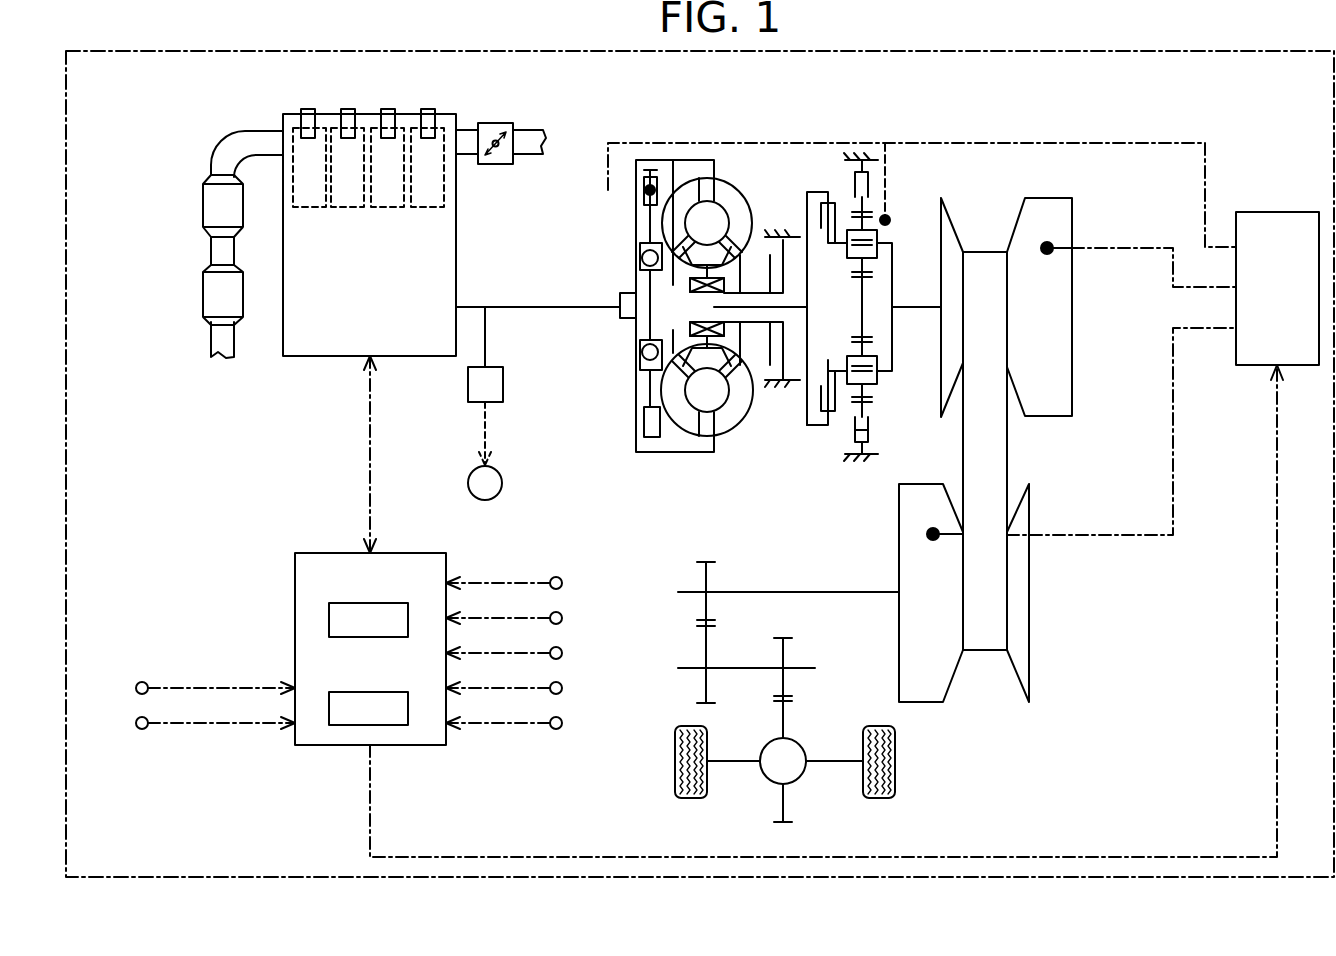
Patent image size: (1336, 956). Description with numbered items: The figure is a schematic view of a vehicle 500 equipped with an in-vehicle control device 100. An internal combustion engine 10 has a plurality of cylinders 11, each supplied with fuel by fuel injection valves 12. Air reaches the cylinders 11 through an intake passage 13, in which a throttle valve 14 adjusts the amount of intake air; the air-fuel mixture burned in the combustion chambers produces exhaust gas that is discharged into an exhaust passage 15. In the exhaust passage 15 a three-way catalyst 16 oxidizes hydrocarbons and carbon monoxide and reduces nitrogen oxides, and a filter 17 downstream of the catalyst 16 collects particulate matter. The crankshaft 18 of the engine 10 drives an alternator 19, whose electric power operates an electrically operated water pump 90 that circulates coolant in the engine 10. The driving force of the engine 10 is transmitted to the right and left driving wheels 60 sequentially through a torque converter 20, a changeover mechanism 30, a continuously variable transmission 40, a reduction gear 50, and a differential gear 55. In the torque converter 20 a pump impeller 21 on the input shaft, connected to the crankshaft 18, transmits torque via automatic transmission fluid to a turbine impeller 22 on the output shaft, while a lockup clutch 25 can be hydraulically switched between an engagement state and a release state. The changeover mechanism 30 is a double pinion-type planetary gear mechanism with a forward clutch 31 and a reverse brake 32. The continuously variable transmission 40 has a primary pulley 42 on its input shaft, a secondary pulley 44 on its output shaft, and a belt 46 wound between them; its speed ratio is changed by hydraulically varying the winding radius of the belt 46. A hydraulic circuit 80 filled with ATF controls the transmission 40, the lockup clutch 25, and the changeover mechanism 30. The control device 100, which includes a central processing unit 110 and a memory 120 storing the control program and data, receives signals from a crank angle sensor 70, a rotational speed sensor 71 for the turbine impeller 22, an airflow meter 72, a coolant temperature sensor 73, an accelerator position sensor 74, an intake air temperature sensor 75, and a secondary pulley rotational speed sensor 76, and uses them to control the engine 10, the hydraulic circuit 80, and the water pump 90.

The vehicle 500 is at (128, 51).
The internal combustion engine 10 is at (299, 381).
The cylinders 11 is at (293, 197).
The fuel injection valves 12 is at (308, 109).
The intake passage 13 is at (538, 130).
The throttle valve 14 is at (498, 123).
The exhaust passage 15 is at (253, 131).
The three-way catalyst 16 is at (203, 207).
The filter 17 is at (203, 295).
The crankshaft 18 is at (520, 310).
The alternator 19 is at (468, 390).
The electrically operated water pump 90 is at (468, 483).
The torque converter 20 is at (690, 322).
The pump impeller 21 is at (735, 417).
The turbine impeller 22 is at (684, 417).
The lockup clutch 25 is at (644, 422).
The changeover mechanism 30 is at (864, 338).
The forward clutch 31 is at (840, 418).
The reverse brake 32 is at (876, 438).
The continuously variable transmission 40 is at (1038, 296).
The primary pulley 42 is at (1072, 278).
The secondary pulley 44 is at (899, 560).
The belt 46 is at (1007, 450).
The reduction gear 50 is at (675, 649).
The differential gear 55 is at (752, 797).
The driving wheels 60 is at (675, 762).
The crank angle sensor 70 is at (562, 583).
The rotational speed sensor 71 is at (562, 618).
The airflow meter 72 is at (562, 653).
The coolant temperature sensor 73 is at (562, 688).
The accelerator position sensor 74 is at (562, 723).
The intake air temperature sensor 75 is at (136, 723).
The secondary pulley rotational speed sensor 76 is at (136, 688).
The hydraulic circuit 80 is at (1278, 212).
The in-vehicle control device 100 is at (336, 649).
The central processing unit 110 is at (372, 603).
The memory 120 is at (372, 692).